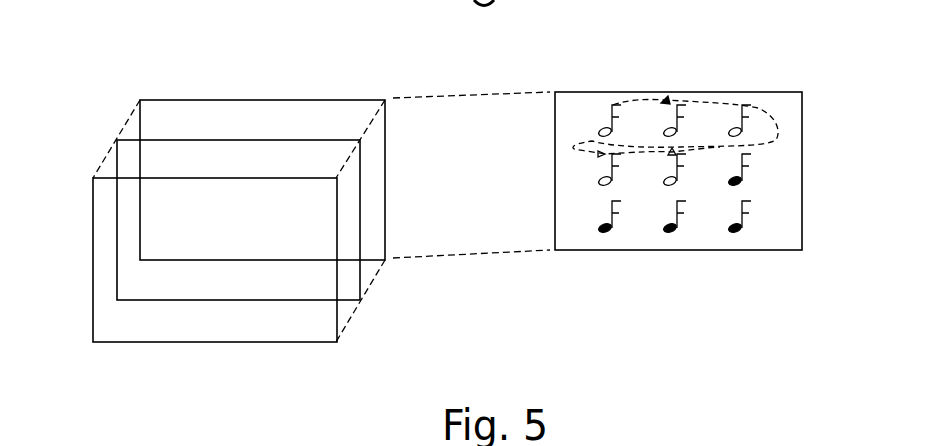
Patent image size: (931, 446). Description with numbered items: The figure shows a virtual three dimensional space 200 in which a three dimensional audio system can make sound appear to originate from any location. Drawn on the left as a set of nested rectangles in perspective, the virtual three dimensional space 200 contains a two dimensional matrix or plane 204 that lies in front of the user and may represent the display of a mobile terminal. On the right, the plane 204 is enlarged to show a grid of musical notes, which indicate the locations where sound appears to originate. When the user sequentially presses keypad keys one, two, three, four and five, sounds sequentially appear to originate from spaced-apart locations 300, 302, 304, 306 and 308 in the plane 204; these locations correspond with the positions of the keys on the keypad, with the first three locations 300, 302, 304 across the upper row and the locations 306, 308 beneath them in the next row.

The virtual three dimensional space 200 is at (84, 124).
The plane 204 is at (257, 100).
The location 300 is at (603, 128).
The location 302 is at (668, 128).
The location 304 is at (734, 128).
The location 306 is at (603, 184).
The location 308 is at (667, 184).